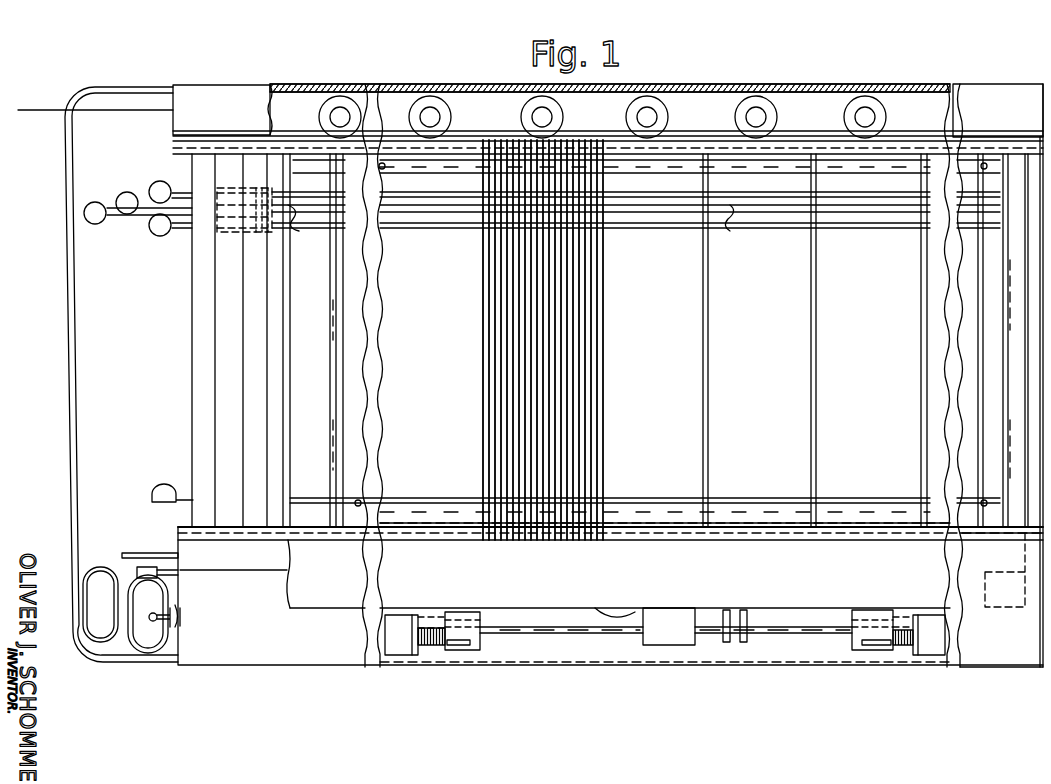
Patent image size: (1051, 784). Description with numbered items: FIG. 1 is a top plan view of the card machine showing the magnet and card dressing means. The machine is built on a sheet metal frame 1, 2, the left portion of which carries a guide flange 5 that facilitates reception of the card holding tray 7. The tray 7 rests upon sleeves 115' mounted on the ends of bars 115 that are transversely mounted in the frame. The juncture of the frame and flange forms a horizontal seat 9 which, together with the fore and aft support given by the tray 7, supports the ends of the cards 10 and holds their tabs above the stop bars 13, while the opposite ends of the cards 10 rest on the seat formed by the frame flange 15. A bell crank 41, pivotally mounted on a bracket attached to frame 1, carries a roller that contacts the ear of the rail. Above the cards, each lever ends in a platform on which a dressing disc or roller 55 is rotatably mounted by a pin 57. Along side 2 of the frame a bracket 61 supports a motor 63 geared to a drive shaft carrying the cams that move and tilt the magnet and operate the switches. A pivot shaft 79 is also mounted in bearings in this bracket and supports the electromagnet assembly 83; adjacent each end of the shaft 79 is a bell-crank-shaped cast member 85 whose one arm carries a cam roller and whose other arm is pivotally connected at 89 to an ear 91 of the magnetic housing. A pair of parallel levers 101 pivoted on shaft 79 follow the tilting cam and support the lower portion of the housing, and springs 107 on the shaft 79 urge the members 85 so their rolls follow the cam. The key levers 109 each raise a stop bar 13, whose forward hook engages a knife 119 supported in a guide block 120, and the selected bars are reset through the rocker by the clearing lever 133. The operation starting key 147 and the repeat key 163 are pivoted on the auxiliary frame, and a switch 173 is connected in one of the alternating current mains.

The sheet metal frame 1 is at (173, 148).
The frame side 2 is at (180, 522).
The guide flange 5 is at (278, 130).
The card holding tray 7 is at (303, 172).
The horizontal seat 9 is at (780, 144).
The cards 10 is at (580, 305).
The stop bars 13 is at (298, 224).
The frame flange 15 is at (750, 535).
The bell crank 41 is at (42, 110).
The dressing disc or roller 55 is at (522, 109).
The pin 57 is at (627, 111).
The bracket 61 is at (400, 648).
The motor 63 is at (609, 608).
The pivot shaft 79 is at (567, 631).
The electromagnet assembly 83 is at (308, 605).
The cast member 85 is at (480, 645).
The pivotal connection 89 is at (473, 605).
The ear 91 is at (427, 617).
The parallel levers 101 is at (742, 607).
The springs 107 is at (433, 645).
The key levers 109 is at (172, 231).
The bars 115 is at (660, 340).
The sleeves 115' is at (679, 338).
The knife 119 is at (247, 208).
The guide block 120 is at (228, 370).
The clearing lever 133 is at (143, 534).
The operation starting key 147 is at (110, 556).
The repeat key 163 is at (151, 647).
The switch 173 is at (182, 620).